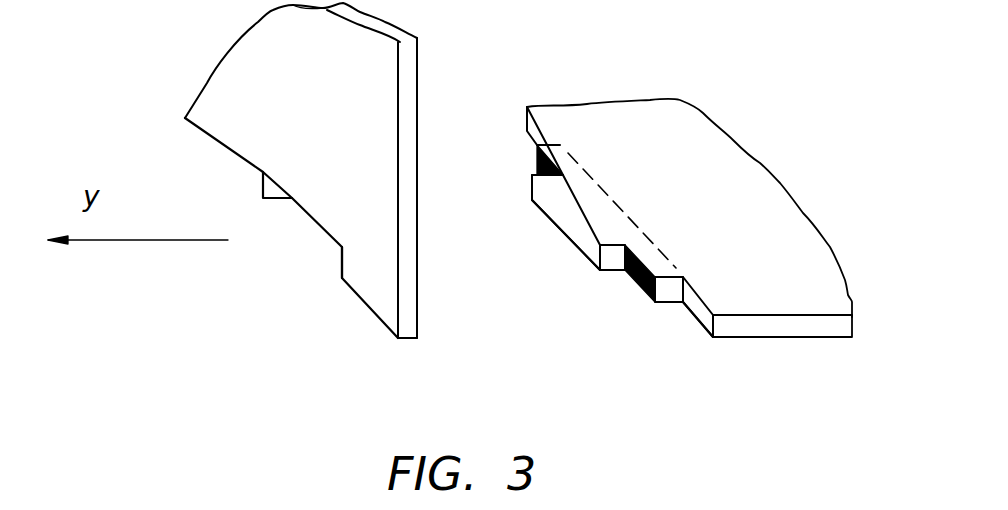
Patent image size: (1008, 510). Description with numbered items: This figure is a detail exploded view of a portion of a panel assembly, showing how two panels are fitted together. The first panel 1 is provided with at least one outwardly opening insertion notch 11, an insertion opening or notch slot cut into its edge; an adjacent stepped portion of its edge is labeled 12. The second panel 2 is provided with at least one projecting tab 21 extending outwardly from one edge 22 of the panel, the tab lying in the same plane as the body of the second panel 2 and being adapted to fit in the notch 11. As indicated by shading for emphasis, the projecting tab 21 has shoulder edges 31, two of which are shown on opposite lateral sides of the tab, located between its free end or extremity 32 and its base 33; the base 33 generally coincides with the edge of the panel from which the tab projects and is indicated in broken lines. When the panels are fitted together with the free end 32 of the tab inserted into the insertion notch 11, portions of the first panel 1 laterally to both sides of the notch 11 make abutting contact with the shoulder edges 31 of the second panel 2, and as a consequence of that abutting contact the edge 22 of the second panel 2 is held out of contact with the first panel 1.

The first panel 1 is at (223, 88).
The insertion notch 11 is at (305, 232).
The stepped edge of blade 12 is at (390, 365).
The second panel 2 is at (675, 130).
The projecting tab 21 is at (575, 185).
The edge of second panel 22 is at (700, 318).
The shoulder edge 31 is at (638, 292).
The free end of tab 32 is at (567, 223).
The base of tab 33 is at (620, 192).